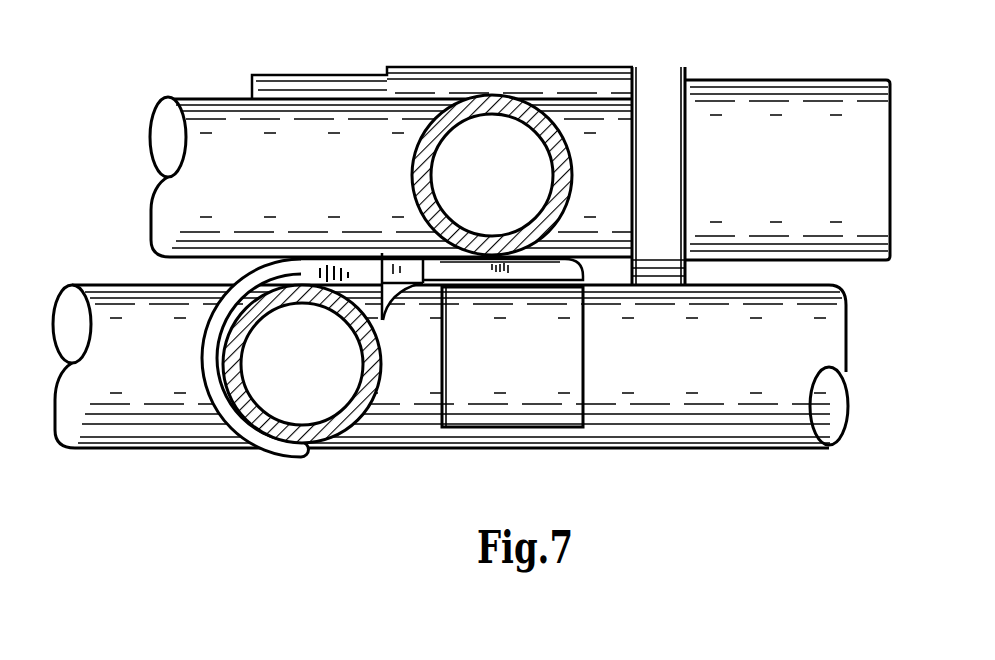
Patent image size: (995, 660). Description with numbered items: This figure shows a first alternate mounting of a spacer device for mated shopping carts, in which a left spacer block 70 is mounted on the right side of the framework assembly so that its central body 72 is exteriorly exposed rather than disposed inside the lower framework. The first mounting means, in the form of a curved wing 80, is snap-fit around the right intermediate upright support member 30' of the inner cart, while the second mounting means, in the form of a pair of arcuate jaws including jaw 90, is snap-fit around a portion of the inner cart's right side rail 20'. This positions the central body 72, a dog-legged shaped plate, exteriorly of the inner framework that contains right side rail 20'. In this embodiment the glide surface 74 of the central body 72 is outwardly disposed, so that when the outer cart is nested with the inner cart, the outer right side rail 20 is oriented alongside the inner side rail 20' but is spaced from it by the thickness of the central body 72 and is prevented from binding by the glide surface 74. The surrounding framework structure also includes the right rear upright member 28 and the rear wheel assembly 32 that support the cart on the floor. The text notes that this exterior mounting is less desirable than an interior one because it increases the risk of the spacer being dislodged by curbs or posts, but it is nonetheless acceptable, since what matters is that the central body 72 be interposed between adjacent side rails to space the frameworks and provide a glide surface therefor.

The right side rail 20 is at (390, 148).
The right side rail 20' is at (450, 395).
The right rear upright member 28 is at (487, 97).
The right intermediate upright support member 30' is at (312, 394).
The rear wheel assembly 32 is at (733, 92).
The left spacer block 70 is at (360, 268).
The central body 72 is at (458, 270).
The glide surface 74 is at (377, 268).
The curved wing 80 is at (208, 368).
The arcuate jaw 90 is at (500, 403).